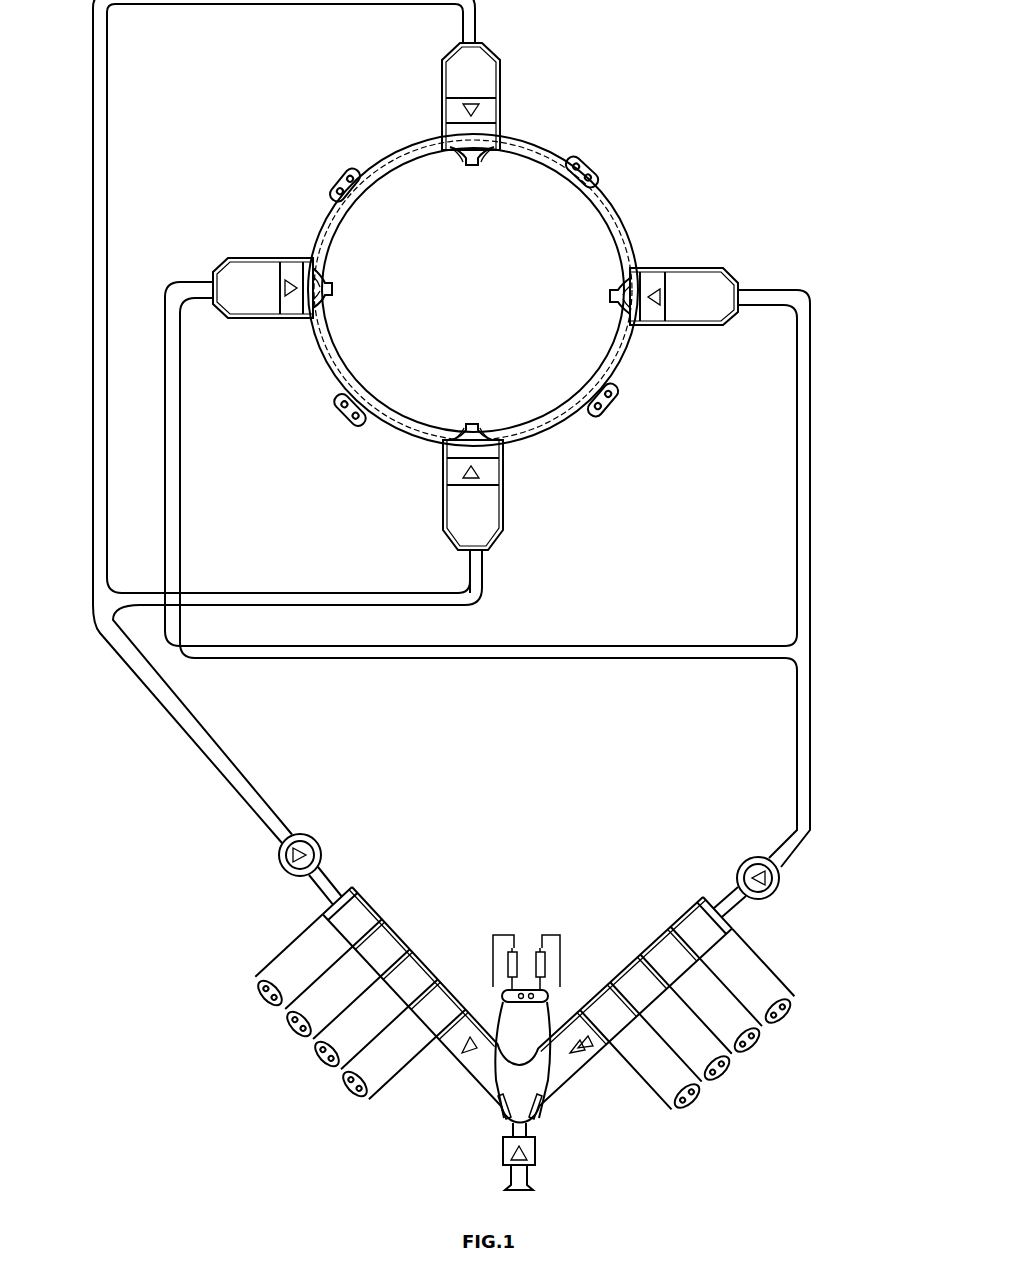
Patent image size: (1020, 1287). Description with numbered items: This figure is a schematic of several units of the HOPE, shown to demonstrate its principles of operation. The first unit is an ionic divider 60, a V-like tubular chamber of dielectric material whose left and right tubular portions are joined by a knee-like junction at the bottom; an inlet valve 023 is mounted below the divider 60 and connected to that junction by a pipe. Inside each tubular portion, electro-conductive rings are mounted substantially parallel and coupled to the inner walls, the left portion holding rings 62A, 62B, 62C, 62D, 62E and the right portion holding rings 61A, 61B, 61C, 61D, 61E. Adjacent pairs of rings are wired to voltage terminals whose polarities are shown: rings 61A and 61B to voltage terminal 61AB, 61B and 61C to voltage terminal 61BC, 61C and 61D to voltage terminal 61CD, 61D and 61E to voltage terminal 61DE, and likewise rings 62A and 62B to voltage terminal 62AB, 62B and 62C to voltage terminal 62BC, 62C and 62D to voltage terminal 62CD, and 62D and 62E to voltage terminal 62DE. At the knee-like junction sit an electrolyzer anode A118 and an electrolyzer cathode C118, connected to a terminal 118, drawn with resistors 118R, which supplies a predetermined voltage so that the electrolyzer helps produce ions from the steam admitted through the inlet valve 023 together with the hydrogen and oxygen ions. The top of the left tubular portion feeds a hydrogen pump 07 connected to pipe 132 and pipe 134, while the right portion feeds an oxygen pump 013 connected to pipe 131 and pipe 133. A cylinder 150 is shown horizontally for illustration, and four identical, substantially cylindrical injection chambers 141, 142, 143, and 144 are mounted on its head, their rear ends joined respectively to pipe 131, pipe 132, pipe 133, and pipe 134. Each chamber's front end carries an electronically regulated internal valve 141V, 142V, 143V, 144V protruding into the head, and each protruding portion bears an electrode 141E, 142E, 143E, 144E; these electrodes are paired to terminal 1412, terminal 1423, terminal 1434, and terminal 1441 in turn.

The cylinder 150 is at (615, 210).
The pipe 134 is at (287, 8).
The pipe 132 is at (386, 597).
The pipe 133 is at (181, 469).
The pipe 131 is at (812, 470).
The injection chamber 144 is at (501, 48).
The internal valve 144V is at (497, 110).
The electrode 144E is at (473, 161).
The injection chamber 143 is at (222, 257).
The internal valve 143V is at (287, 261).
The electrode 143E is at (336, 288).
The injection chamber 141 is at (716, 266).
The internal valve 141V is at (658, 268).
The electrode 141E is at (608, 296).
The injection chamber 142 is at (504, 528).
The internal valve 142V is at (500, 470).
The electrode 142E is at (472, 425).
The terminal 1434 is at (340, 185).
The terminal 1441 is at (597, 162).
The terminal 1423 is at (346, 410).
The terminal 1412 is at (608, 410).
The hydrogen pump 07 is at (320, 843).
The oxygen pump 013 is at (750, 858).
The ionic divider 60 is at (318, 908).
The ring 62E is at (357, 884).
The ring 62D is at (384, 917).
The ring 62C is at (411, 947).
The ring 62B is at (439, 977).
The ring 62A is at (466, 1007).
The voltage terminal 62DE is at (256, 992).
The voltage terminal 62CD is at (287, 1028).
The voltage terminal 62BC is at (315, 1060).
The voltage terminal 62AB is at (350, 1095).
The ring 61E is at (700, 895).
The ring 61D is at (670, 925).
The ring 61C is at (640, 953).
The ring 61B is at (610, 980).
The ring 61A is at (580, 1008).
The voltage terminal 61DE is at (788, 1012).
The voltage terminal 61CD is at (757, 1042).
The voltage terminal 61BC is at (727, 1070).
The voltage terminal 61AB is at (695, 1102).
The resistors 118R is at (540, 950).
The terminal 118 is at (527, 1003).
The electrolyzer cathode C118 is at (500, 1121).
The electrolyzer anode A118 is at (547, 1121).
The inlet valve 023 is at (537, 1152).